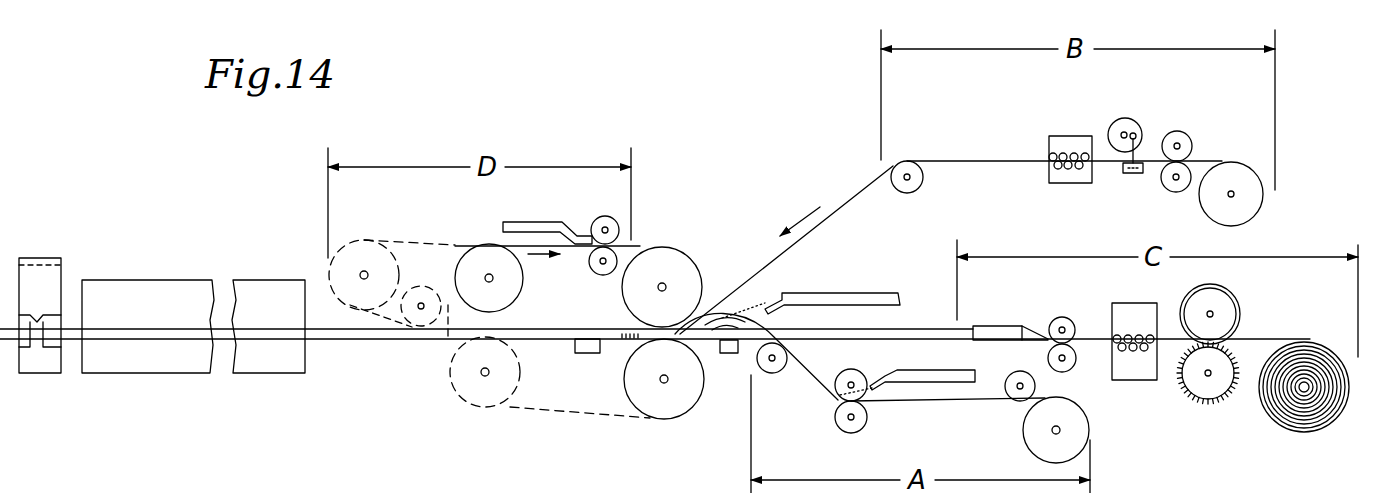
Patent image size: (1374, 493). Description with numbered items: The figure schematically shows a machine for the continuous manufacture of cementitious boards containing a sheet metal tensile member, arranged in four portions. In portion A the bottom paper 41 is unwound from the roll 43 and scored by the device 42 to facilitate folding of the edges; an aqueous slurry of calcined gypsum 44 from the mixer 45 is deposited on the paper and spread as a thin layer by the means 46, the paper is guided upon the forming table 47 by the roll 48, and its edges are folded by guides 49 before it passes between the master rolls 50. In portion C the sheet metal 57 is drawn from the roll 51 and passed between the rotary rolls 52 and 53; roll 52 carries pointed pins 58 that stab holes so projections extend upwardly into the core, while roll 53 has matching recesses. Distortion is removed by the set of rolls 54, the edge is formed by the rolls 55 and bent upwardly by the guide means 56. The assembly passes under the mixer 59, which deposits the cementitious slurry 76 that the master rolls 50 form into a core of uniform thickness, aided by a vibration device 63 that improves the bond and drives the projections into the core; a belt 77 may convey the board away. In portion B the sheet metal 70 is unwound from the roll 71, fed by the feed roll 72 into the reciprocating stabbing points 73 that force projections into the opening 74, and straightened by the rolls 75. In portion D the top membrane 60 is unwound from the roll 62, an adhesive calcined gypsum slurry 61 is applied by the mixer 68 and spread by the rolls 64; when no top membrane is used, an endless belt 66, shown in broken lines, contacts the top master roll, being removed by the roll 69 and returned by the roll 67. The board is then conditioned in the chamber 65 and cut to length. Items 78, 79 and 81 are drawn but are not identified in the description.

The bottom paper 41 is at (983, 401).
The scoring device 42 is at (1035, 387).
The roll 43 is at (1078, 422).
The aqueous slurry of calcined gypsum 44 is at (883, 393).
The mixer 45 is at (950, 371).
The spreading means 46 is at (845, 375).
The forming table 47 is at (550, 340).
The roll 48 is at (782, 372).
The guides 49 is at (733, 353).
The master rolls 50 is at (685, 265).
The roll 51 is at (1330, 408).
The rotary roll 52 is at (1205, 396).
The rotary roll 53 is at (1238, 300).
The set of rolls 54 is at (1127, 308).
The rolls 55 is at (1066, 318).
The guide means 56 is at (998, 327).
The sheet metal 57 is at (1262, 341).
The pointed pins 58 is at (1198, 397).
The mixer 59 is at (830, 293).
The top membrane 60 is at (513, 246).
The aqueous calcined gypsum slurry 61 is at (582, 240).
The roll 62 is at (518, 277).
The vibration device 63 is at (585, 353).
The rolls 64 is at (612, 222).
The chamber 65 is at (250, 292).
The endless belt 66 is at (414, 242).
The roll 67 is at (330, 258).
The mixer 68 is at (532, 220).
The roll 69 is at (424, 338).
The sheet metal 70 is at (978, 160).
The roll 71 is at (1250, 205).
The feed roll 72 is at (1178, 131).
The reciprocating multiple stabbing points 73 is at (1129, 118).
The opening 74 is at (1133, 175).
The rolls 75 is at (1065, 135).
The cementitious slurry 76 is at (742, 302).
The belt 77 is at (522, 412).
The element 78 is at (345, 492).
The block 79 is at (40, 342).
The element 81 is at (535, 485).